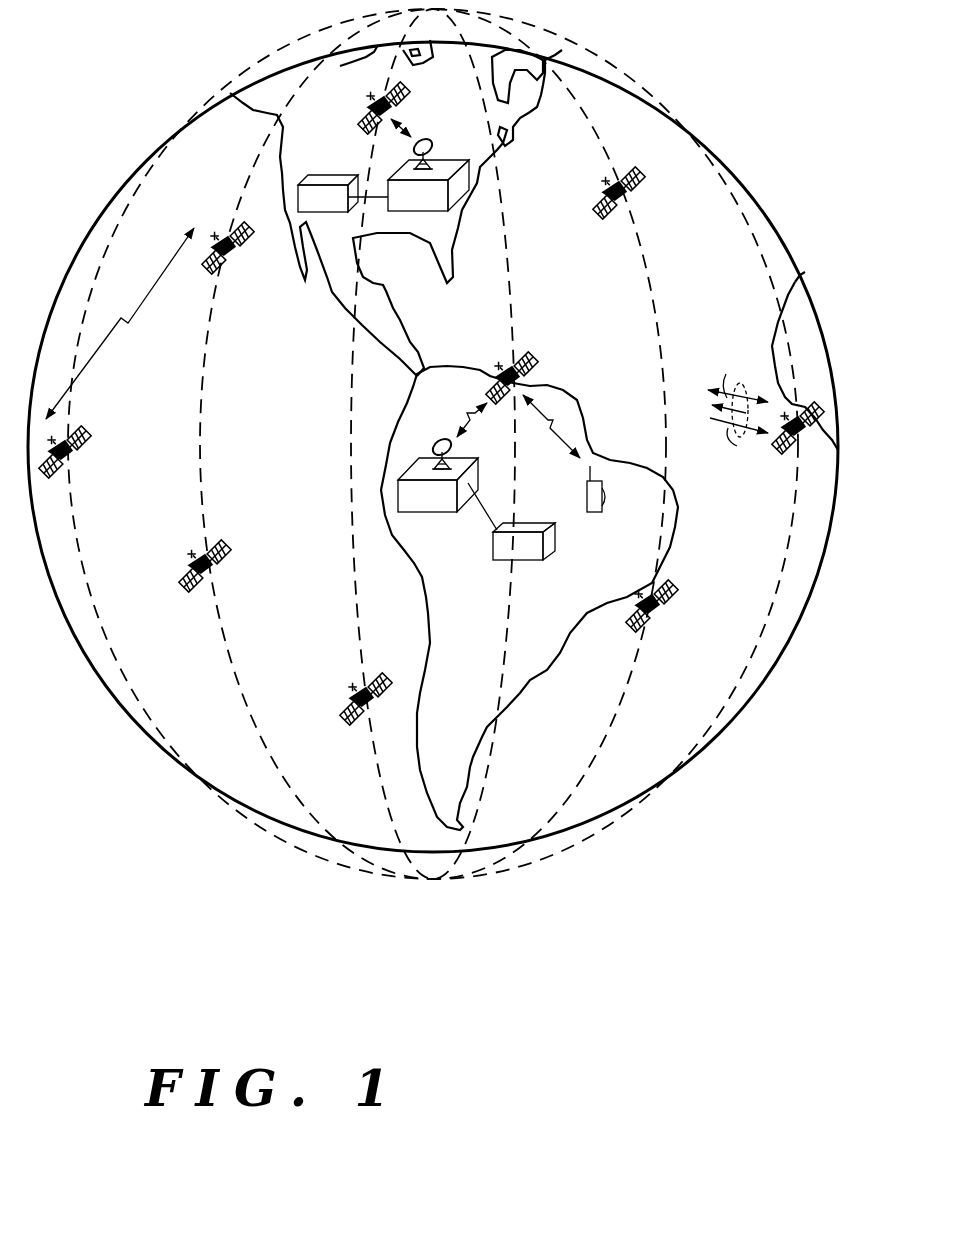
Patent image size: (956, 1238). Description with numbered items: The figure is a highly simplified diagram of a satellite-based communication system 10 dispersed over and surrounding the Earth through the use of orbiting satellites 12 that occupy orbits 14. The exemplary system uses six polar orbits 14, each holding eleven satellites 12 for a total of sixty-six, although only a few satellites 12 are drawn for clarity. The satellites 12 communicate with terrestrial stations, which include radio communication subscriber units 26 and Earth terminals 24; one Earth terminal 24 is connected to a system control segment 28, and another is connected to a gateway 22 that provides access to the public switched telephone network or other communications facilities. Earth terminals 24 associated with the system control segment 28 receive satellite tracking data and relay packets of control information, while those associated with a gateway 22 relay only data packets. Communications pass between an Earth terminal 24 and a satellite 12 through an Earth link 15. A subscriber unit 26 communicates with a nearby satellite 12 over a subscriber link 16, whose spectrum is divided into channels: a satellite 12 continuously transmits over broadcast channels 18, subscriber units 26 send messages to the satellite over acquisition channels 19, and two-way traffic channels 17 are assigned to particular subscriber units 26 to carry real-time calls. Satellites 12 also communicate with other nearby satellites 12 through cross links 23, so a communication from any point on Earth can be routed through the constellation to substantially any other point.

The satellite-based communication system 10 is at (428, 982).
The satellite 12 is at (362, 133).
The orbit 14 is at (256, 168).
The Earth link 15 is at (468, 418).
The subscriber link 16 is at (547, 410).
The traffic channel 17 is at (722, 371).
The broadcast channel 18 is at (712, 402).
The acquisition channel 19 is at (716, 447).
The gateway 22 is at (530, 562).
The cross link 23 is at (135, 313).
The Earth terminal 24 is at (450, 160).
The subscriber unit 26 is at (593, 513).
The system control segment 28 is at (312, 213).